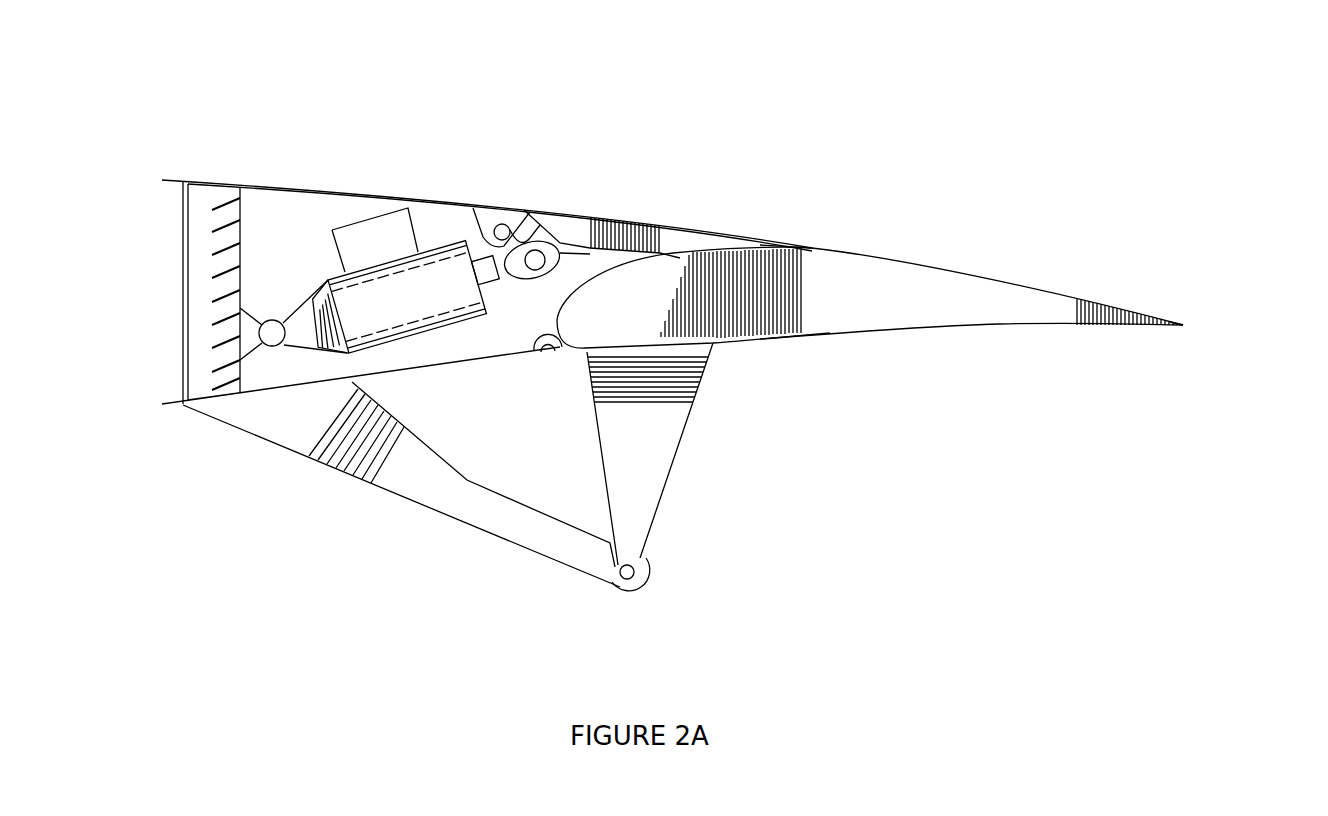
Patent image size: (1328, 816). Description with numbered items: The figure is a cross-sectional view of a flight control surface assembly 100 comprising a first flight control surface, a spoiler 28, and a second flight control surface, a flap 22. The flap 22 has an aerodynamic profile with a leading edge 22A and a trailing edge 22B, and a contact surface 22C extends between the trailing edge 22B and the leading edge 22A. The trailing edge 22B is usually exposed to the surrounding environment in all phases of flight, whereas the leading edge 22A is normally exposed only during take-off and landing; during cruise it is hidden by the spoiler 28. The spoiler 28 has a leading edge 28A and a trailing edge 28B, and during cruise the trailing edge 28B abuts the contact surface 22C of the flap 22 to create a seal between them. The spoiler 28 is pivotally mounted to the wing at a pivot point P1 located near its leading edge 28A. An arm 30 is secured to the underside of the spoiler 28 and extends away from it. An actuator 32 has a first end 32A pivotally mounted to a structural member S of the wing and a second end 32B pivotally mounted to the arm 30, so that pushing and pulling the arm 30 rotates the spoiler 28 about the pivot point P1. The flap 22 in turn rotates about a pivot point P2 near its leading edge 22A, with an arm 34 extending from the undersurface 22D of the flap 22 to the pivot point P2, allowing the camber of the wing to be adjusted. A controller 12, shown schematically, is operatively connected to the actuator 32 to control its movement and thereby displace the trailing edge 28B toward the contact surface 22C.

The flight control surface assembly 100 is at (993, 120).
The structural member S is at (185, 262).
The controller 12 is at (378, 238).
The flap 22 is at (905, 287).
The leading edge 22A is at (540, 362).
The trailing edge 22B is at (1186, 324).
The contact surface 22C is at (1028, 287).
The undersurface 22D is at (813, 330).
The spoiler 28 is at (640, 220).
The leading edge 28A is at (517, 217).
The trailing edge 28B is at (803, 248).
The arm 30 is at (568, 247).
The actuator 32 is at (423, 300).
The first end 32A is at (300, 337).
The second end 32B is at (480, 278).
The arm 34 is at (658, 495).
The pivot point P1 is at (494, 228).
The pivot point P2 is at (627, 592).